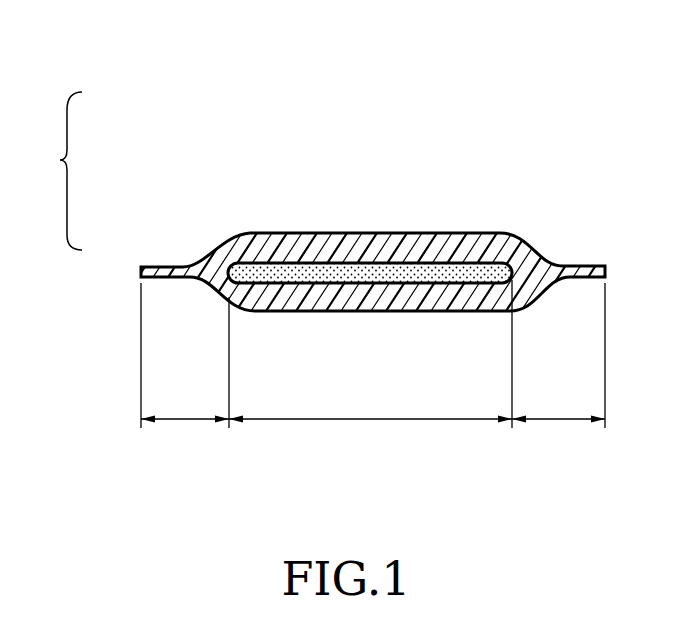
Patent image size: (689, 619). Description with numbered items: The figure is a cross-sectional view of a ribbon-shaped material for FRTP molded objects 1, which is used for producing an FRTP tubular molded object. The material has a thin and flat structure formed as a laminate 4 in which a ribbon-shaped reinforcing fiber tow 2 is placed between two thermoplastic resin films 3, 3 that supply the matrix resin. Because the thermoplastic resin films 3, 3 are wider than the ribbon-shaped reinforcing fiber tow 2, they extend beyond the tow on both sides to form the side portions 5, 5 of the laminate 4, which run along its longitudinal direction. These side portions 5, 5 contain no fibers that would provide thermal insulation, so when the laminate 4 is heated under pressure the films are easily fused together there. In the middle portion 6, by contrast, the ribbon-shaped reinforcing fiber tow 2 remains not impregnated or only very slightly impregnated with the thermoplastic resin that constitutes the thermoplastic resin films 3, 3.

The ribbon-shaped material for FRTP molded objects 1 is at (347, 162).
The ribbon-shaped reinforcing fiber tow 2 is at (328, 270).
The thermoplastic resin films 3 is at (345, 245).
The laminate 4 is at (57, 171).
The side portions 5 is at (182, 420).
The middle portion 6 is at (344, 421).